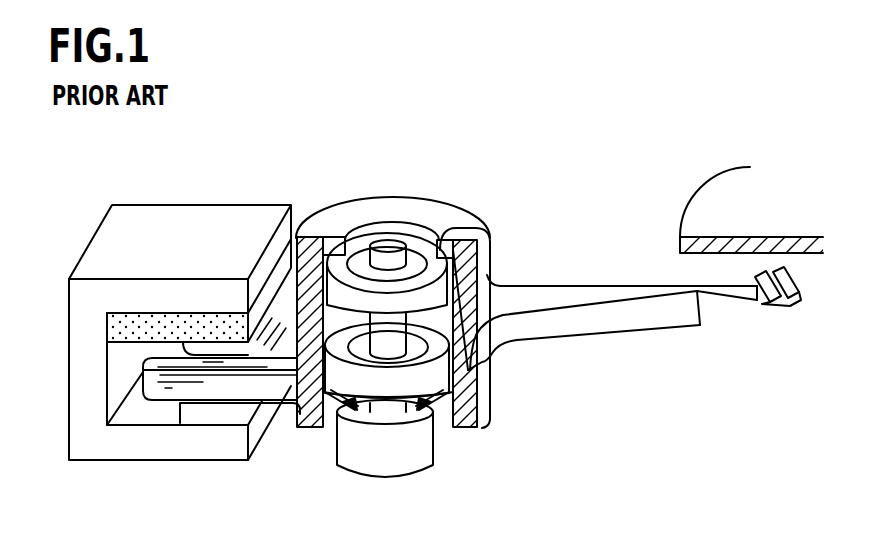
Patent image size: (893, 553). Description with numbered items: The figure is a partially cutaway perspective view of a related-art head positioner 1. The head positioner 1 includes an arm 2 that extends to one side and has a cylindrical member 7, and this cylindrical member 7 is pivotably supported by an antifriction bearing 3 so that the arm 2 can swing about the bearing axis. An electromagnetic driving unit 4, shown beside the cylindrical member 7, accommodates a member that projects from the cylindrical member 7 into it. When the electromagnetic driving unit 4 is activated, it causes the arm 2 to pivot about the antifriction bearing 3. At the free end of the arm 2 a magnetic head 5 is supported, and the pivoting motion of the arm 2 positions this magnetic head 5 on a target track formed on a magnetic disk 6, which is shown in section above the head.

The head positioner 1 is at (581, 143).
The arm 2 is at (587, 327).
The antifriction bearing 3 is at (437, 270).
The electromagnetic driving unit 4 is at (68, 379).
The magnetic head 5 is at (792, 307).
The magnetic disk 6 is at (715, 197).
The cylindrical member 7 is at (378, 212).